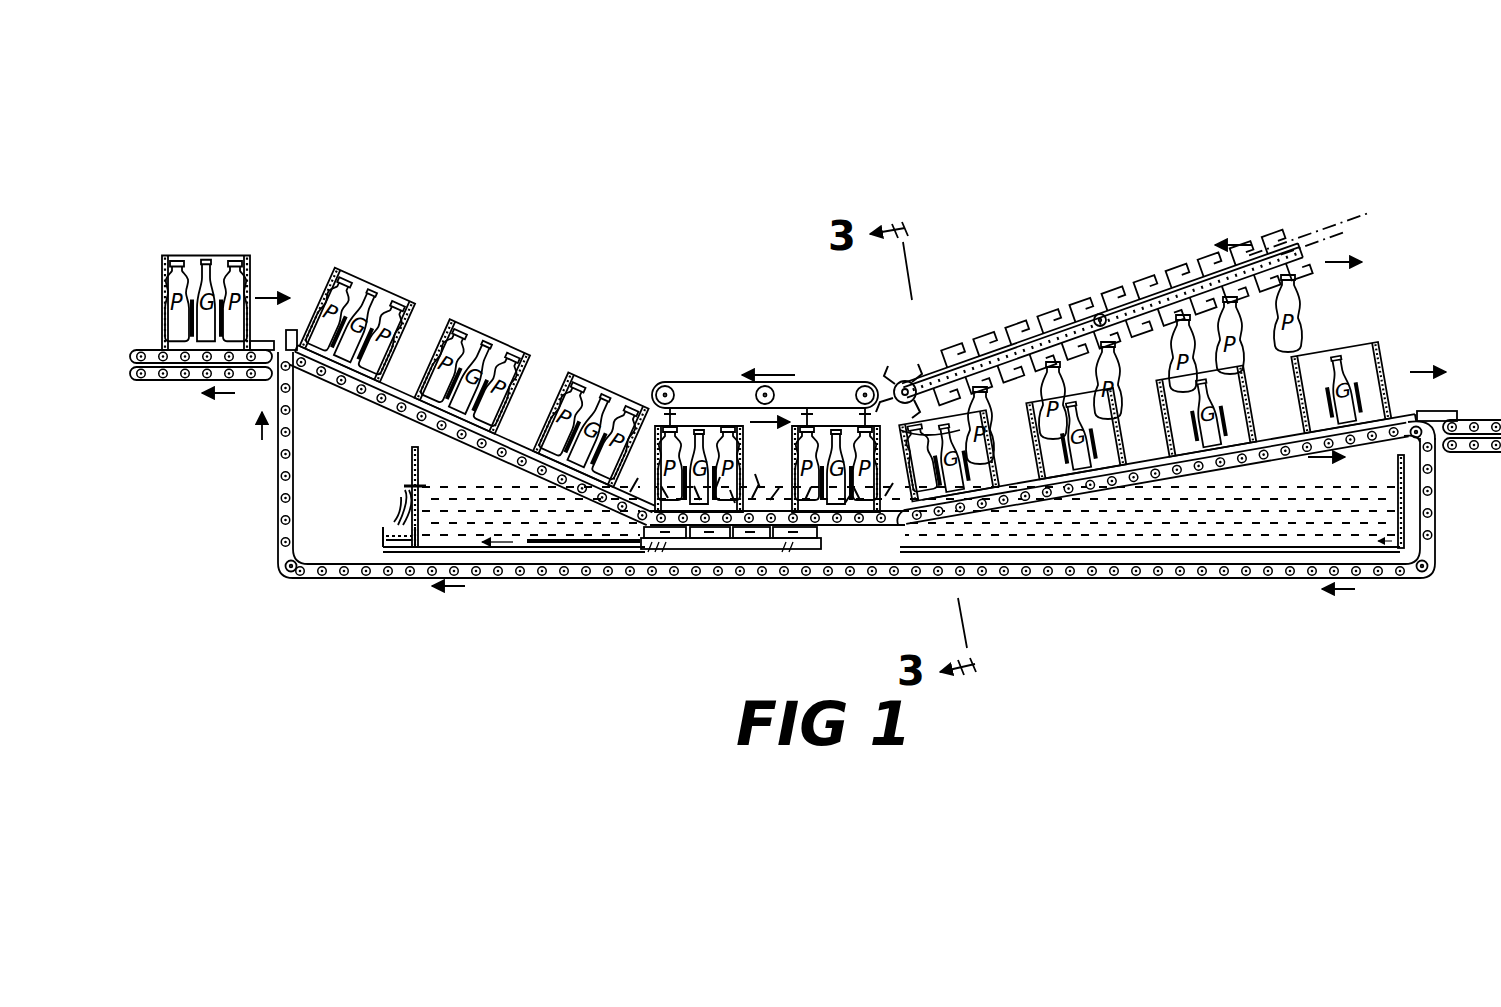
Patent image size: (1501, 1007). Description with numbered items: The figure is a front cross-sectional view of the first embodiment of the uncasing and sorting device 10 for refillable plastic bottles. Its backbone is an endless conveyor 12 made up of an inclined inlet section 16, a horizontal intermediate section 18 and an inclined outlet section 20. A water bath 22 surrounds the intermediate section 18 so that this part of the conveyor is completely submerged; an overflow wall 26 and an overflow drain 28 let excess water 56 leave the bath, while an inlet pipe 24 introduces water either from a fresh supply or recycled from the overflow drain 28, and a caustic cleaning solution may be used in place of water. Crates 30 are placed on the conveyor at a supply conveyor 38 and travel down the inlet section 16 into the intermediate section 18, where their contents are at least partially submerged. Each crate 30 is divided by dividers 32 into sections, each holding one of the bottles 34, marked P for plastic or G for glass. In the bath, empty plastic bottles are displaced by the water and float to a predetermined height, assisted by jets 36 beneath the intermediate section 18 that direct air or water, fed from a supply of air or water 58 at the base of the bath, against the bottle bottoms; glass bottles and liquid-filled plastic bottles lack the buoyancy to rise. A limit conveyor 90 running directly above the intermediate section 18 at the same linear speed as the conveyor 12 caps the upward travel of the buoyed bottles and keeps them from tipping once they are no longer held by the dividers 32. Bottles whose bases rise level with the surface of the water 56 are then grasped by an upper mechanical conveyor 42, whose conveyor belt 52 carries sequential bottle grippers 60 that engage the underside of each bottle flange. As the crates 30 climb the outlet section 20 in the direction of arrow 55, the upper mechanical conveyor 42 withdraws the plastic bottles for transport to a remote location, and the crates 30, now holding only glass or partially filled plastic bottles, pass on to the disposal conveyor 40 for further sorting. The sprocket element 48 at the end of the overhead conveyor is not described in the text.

The uncasing and sorting device 10 is at (635, 256).
The endless conveyor 12 is at (278, 493).
The inlet section 16 is at (384, 411).
The intermediate section 18 is at (762, 536).
The outlet section 20 is at (1225, 456).
The water bath 22 is at (1402, 523).
The inlet pipe 24 is at (563, 545).
The overflow wall 26 is at (412, 462).
The overflow drain 28 is at (381, 532).
The crate 30 is at (250, 257).
The dividers 32 is at (462, 338).
The bottles 34 is at (342, 288).
The jets 36 is at (650, 534).
The supply conveyor 38 is at (168, 398).
The disposal conveyor 40 is at (1487, 460).
The upper mechanical conveyor 42 is at (1022, 300).
The gripper sprocket 48 is at (903, 379).
The conveyor belt 52 is at (1100, 314).
The arrow 55 is at (1416, 370).
The water 56 is at (396, 500).
The supply of air or water 58 is at (682, 545).
The bottle grippers 60 is at (948, 352).
The limit conveyor 90 is at (806, 382).